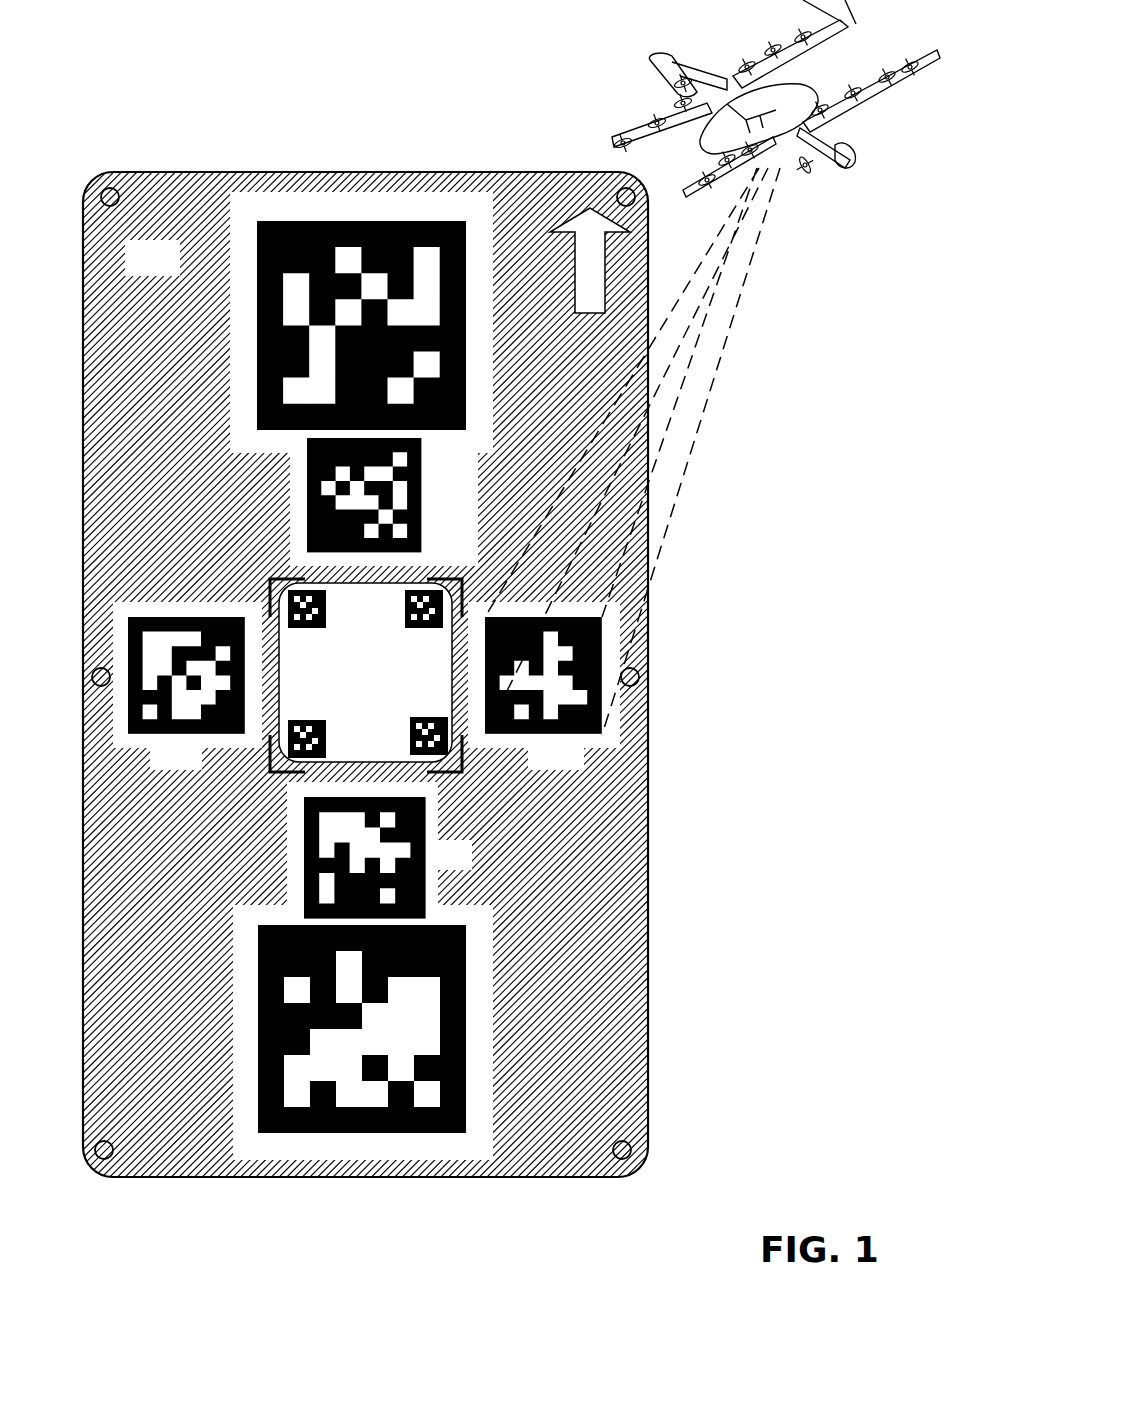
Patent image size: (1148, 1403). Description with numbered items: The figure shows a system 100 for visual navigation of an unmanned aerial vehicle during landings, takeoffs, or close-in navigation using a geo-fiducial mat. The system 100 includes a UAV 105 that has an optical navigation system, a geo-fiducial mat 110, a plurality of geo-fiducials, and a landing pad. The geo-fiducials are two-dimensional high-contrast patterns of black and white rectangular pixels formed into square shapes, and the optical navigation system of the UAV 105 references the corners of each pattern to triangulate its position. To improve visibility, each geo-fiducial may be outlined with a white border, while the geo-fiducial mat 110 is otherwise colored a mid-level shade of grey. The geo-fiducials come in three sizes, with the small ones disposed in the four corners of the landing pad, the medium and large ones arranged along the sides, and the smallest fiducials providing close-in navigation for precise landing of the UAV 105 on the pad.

The system 100 is at (122, 73).
The UAV 105 is at (626, 86).
The geo-fiducial mat 110 is at (172, 274).